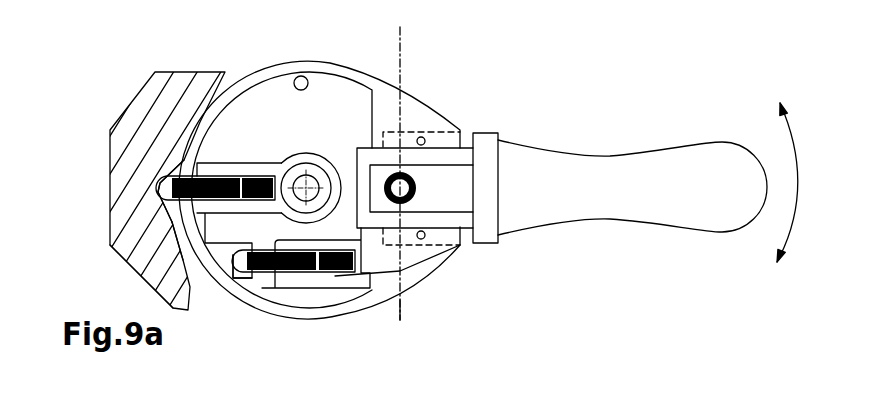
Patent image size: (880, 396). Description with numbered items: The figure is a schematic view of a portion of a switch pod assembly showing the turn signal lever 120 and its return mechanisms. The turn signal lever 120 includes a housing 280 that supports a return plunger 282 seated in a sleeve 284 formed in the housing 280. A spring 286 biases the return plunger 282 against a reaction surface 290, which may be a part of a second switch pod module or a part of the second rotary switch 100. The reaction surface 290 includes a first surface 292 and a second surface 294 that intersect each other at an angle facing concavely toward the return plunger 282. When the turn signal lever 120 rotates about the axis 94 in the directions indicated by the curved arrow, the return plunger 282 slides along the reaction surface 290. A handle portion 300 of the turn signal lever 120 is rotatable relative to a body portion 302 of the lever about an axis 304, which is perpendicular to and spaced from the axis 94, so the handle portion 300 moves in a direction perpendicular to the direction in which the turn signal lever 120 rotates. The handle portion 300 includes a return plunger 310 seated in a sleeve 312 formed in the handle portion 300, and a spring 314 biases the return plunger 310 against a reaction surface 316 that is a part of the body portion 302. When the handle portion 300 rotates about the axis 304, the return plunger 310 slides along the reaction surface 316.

The second rotary switch 100 is at (172, 54).
The turn signal lever 120 is at (233, 52).
The axis 94 is at (309, 182).
The housing 280 is at (458, 86).
The return plunger 282 is at (155, 188).
The sleeve 284 is at (220, 172).
The spring 286 is at (258, 176).
The reaction surface 290 is at (150, 222).
The first surface 292 is at (170, 158).
The second surface 294 is at (125, 240).
The handle portion 300 is at (592, 178).
The body portion 302 is at (325, 308).
The axis 304 is at (400, 60).
The return plunger 310 is at (252, 274).
The sleeve 312 is at (403, 308).
The spring 314 is at (357, 266).
The reaction surface 316 is at (237, 279).